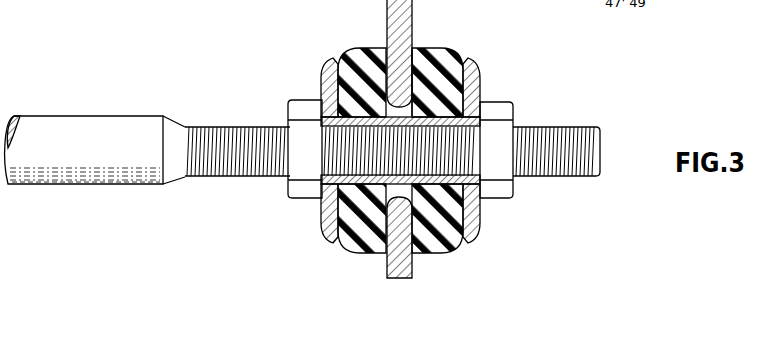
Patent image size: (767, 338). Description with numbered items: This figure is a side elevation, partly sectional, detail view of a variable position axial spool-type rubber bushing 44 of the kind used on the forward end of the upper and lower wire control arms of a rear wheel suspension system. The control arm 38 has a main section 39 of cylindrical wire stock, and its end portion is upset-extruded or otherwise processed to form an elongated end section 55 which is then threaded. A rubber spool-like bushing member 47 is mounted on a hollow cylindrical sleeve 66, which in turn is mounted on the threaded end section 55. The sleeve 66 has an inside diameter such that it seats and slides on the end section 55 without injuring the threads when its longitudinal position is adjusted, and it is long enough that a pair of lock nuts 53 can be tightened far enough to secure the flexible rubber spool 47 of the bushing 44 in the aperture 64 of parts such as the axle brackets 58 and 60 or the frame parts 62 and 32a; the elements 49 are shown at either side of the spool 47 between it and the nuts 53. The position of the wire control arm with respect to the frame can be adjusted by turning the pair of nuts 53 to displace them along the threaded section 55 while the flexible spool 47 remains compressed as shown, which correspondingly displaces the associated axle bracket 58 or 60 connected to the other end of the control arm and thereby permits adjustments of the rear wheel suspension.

The main section 39 is at (95, 157).
The upper wire control arm 38 is at (55, 170).
The elongated end section 55 is at (228, 172).
The lock nuts 53 is at (300, 200).
The hollow cylindrical sleeve 66 is at (474, 112).
The cup washer 49 is at (330, 64).
The variable position axial spool-type rubber bushing 44 is at (362, 44).
The rubber spool-like bushing member 47 is at (428, 55).
The aperture 64 is at (441, 60).
The axle bracket 58 is at (466, 139).
The axle bracket 60 is at (466, 139).
The frame part 62 is at (466, 139).
The frame part 32a is at (412, 272).